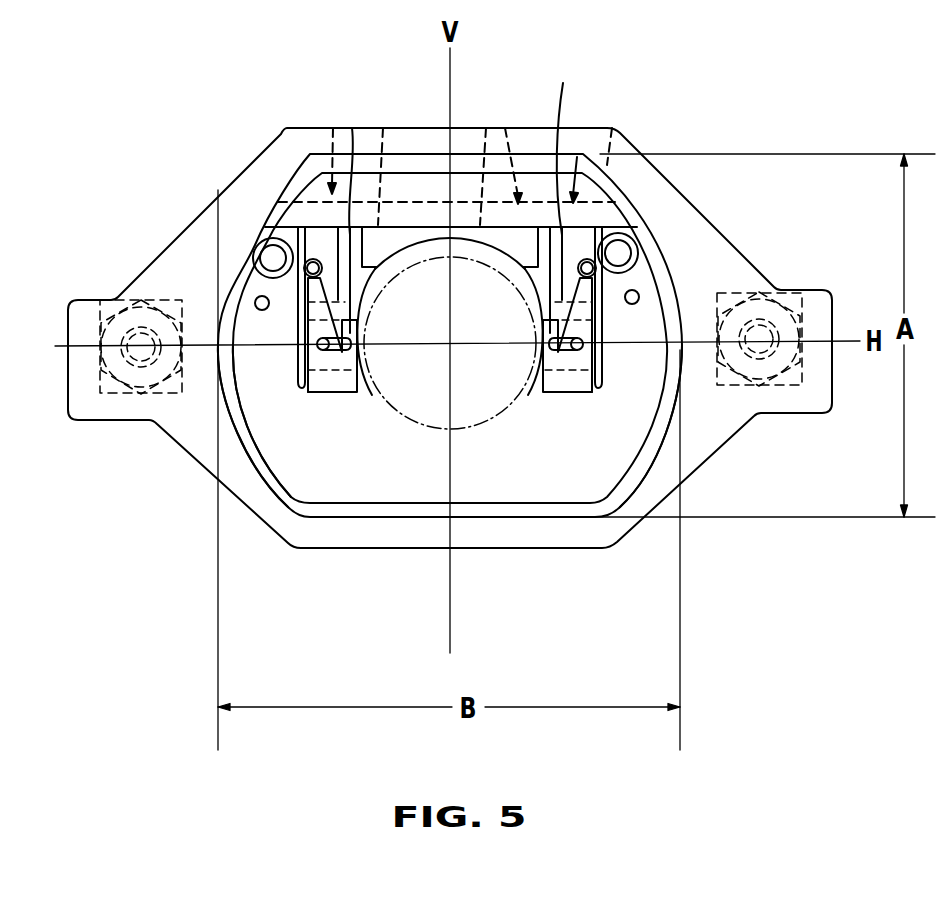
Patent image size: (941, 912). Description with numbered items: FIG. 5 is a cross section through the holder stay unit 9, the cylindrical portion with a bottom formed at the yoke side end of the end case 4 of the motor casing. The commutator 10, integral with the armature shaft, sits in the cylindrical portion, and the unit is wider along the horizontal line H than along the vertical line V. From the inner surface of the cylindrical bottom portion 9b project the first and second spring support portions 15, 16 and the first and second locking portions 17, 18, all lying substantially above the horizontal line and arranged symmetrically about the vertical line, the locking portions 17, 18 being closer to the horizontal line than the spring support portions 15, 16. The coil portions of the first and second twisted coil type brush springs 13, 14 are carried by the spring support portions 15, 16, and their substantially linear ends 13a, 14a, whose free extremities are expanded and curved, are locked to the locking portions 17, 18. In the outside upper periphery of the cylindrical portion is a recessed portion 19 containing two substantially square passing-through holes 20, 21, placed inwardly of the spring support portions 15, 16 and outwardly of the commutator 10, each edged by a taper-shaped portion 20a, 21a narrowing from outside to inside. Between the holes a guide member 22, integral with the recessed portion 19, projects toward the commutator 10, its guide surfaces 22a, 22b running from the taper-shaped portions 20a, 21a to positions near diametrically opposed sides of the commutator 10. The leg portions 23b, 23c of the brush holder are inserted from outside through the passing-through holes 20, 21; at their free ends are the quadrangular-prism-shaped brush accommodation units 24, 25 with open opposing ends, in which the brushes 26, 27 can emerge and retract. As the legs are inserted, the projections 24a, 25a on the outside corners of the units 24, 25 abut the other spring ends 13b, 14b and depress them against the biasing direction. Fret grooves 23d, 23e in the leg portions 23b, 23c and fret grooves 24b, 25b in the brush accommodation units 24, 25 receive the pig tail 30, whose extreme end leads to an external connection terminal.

The end case 4 is at (278, 138).
The holder stay unit 9 is at (577, 148).
The cylindrical bottom portion 9b is at (645, 410).
The commutator 10 is at (427, 427).
The first brush spring 13 is at (640, 252).
The end of first brush spring 13a is at (652, 322).
The other end of first brush spring 13b is at (610, 338).
The second brush spring 14 is at (268, 240).
The end of second brush spring 14a is at (250, 372).
The other end of second brush spring 14b is at (283, 397).
The first spring support portion 15 is at (622, 250).
The second spring support portion 16 is at (265, 252).
The first locking portion 17 is at (640, 297).
The second locking portion 18 is at (250, 302).
The recessed portion 19 is at (486, 128).
The passing-through hole 20 is at (612, 128).
The taper-shaped portion 20a is at (505, 128).
The passing-through hole 21 is at (333, 128).
The taper-shaped portion 21a is at (383, 128).
The guide member 22 is at (420, 235).
The guide surface 22a is at (395, 305).
The guide surface 22b is at (360, 257).
The leg portion 23b is at (352, 128).
The leg portion 23c is at (563, 83).
The fret groove 23d is at (648, 162).
The fret groove 23e is at (298, 330).
The brush accommodation unit 24 is at (573, 383).
The projection 24a is at (607, 377).
The fret groove 24b is at (560, 343).
The brush accommodation unit 25 is at (330, 386).
The projection 25a is at (284, 384).
The fret groove 25b is at (362, 352).
The brush 26 is at (527, 362).
The brush 27 is at (353, 340).
The pig tail 30 is at (383, 296).